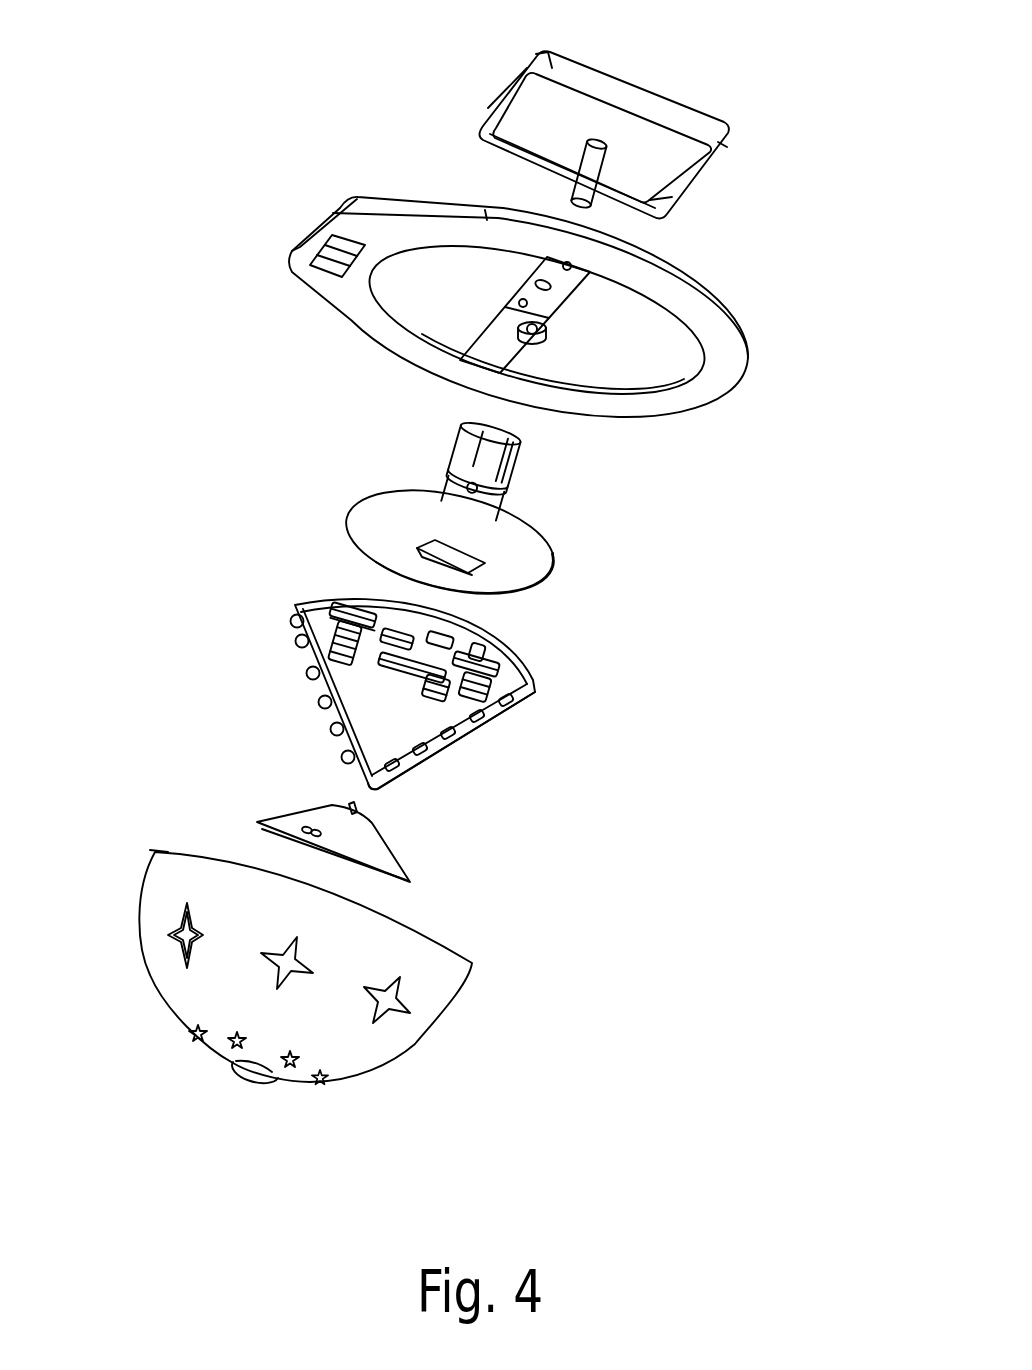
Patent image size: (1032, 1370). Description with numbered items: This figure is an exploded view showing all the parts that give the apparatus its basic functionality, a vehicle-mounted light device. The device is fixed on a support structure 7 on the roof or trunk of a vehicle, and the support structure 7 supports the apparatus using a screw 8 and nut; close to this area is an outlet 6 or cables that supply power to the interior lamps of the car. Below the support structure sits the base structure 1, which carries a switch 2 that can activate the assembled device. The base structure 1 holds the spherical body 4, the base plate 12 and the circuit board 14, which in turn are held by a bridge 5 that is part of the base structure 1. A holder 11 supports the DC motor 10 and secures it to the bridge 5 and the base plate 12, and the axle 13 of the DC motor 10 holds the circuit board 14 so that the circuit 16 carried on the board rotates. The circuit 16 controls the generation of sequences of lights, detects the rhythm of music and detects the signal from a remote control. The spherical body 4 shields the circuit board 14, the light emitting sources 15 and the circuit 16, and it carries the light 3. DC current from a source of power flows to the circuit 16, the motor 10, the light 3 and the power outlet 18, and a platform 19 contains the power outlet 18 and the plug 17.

The base structure 1 is at (390, 207).
The switch 2 is at (317, 263).
The light 3 is at (240, 1077).
The spherical body 4 is at (438, 963).
The bridge 5 is at (563, 278).
The outlet 6 is at (510, 90).
The support structure 7 is at (618, 90).
The screw 8 is at (583, 178).
The DC motor 10 is at (493, 448).
The holder 11 is at (510, 453).
The base plate 12 is at (370, 500).
The axle 13 is at (486, 492).
The circuit board 14 is at (300, 607).
The light emitting sources 15 is at (533, 698).
The circuit 16 is at (293, 620).
The plug 17 is at (349, 806).
The power outlet 18 is at (290, 818).
The platform 19 is at (353, 831).